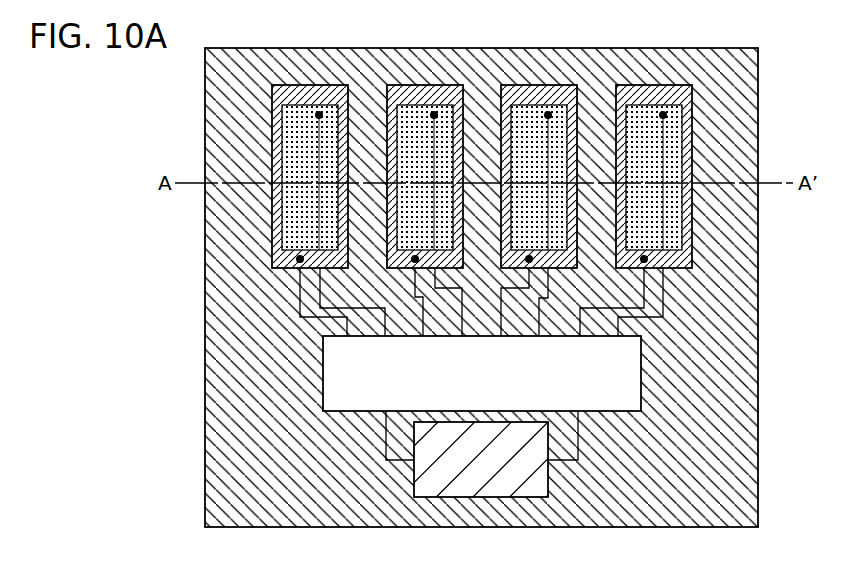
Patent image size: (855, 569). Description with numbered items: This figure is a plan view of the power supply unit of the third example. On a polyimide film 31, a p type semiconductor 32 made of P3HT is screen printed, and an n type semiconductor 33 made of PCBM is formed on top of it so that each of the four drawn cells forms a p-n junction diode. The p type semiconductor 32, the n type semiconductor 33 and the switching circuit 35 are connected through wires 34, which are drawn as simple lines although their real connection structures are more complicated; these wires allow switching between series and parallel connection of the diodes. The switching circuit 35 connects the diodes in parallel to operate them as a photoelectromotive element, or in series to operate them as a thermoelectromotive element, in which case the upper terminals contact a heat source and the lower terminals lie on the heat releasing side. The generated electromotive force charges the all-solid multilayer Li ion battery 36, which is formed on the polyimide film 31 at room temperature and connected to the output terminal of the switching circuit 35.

The polyimide film 31 is at (222, 373).
The p type semiconductor 32 is at (287, 263).
The n type semiconductor 33 is at (291, 228).
The wires 34 is at (665, 295).
The switching circuit 35 is at (641, 360).
The all-solid multilayer Li ion battery 36 is at (483, 494).